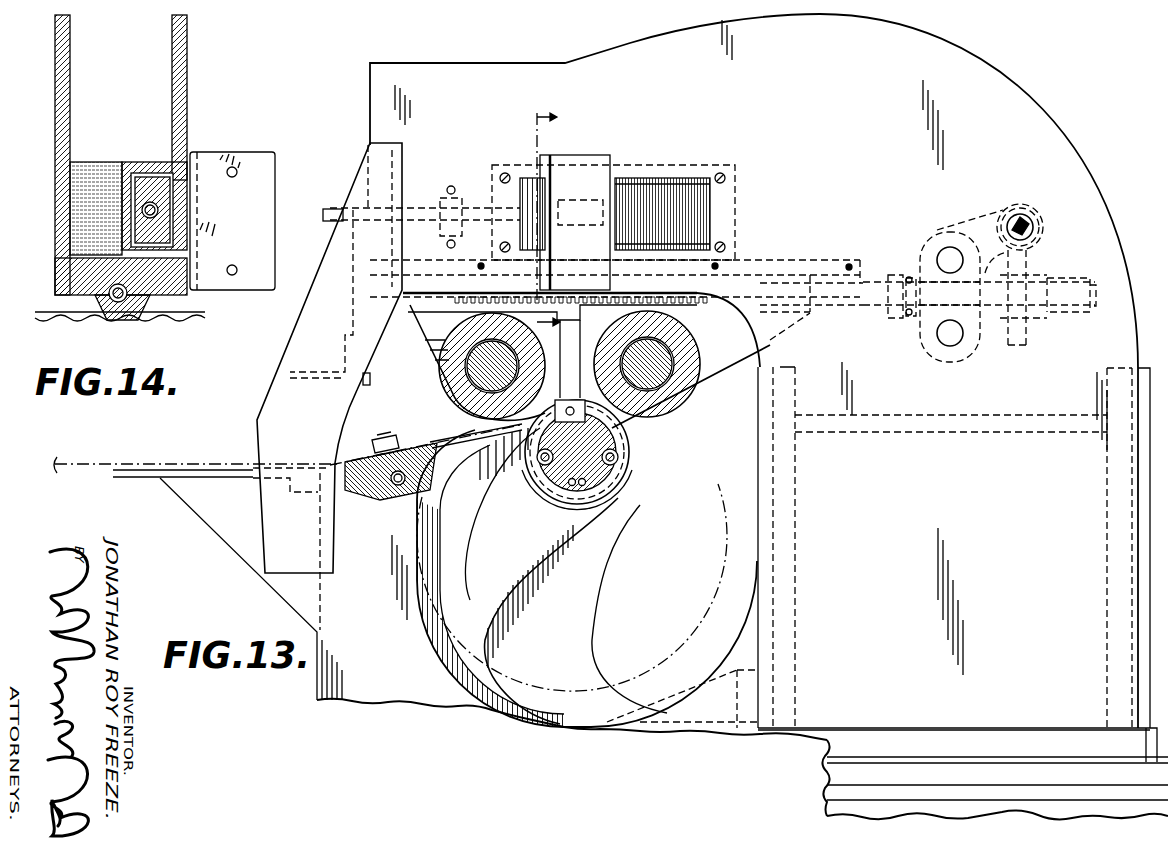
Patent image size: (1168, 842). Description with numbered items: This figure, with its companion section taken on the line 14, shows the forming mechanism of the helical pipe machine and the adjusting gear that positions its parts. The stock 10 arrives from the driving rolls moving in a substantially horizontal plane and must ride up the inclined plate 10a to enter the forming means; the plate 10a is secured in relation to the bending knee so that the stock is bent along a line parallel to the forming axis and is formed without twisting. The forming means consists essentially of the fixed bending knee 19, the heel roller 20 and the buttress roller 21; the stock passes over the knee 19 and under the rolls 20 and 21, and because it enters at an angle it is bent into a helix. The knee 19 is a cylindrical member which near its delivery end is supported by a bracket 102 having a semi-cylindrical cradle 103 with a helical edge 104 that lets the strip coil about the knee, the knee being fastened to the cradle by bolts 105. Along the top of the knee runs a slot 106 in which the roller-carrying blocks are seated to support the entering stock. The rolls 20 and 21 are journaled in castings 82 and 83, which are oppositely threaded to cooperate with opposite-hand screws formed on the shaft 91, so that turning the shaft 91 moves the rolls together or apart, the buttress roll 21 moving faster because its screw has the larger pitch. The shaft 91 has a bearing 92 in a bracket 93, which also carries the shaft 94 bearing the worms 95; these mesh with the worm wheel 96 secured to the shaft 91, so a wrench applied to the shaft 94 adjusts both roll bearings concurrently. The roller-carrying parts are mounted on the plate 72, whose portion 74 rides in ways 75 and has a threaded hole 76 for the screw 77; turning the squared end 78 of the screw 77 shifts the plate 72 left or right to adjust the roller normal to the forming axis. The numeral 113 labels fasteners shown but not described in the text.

In FIG. 13, the stock 10 is at (175, 462).
In FIG. 13, the inclined plate 10a is at (422, 440).
In FIG. 13, the section line 14— 14 is at (560, 229).
In FIG. 13, the bending knee 19 is at (612, 440).
In FIG. 13, the heel roller 20 is at (468, 337).
In FIG. 13, the buttress roller 21 is at (700, 341).
In FIG. 14, the plate 72 is at (241, 152).
In FIG. 13, the plate 72 is at (562, 158).
In FIG. 14, the portion riding in ways 74 is at (152, 176).
In FIG. 14, the ways 75 is at (135, 162).
In FIG. 13, the ways 75 is at (644, 178).
In FIG. 14, the threaded hole 76 is at (157, 206).
In FIG. 13, the threaded hole 76 is at (564, 222).
In FIG. 14, the screw 77 is at (156, 212).
In FIG. 13, the screw 77 is at (528, 178).
In FIG. 13, the squared end 78 is at (336, 210).
In FIG. 13, the casting 82 is at (430, 372).
In FIG. 13, the casting 83 is at (788, 323).
In FIG. 13, the shaft 91 is at (822, 306).
In FIG. 13, the bearing 92 is at (913, 318).
In FIG. 13, the bracket 93 is at (934, 232).
In FIG. 13, the shaft 94 is at (1024, 222).
In FIG. 13, the worms 95 is at (1003, 208).
In FIG. 13, the worm wheel 96 is at (1030, 256).
In FIG. 13, the bracket 102 is at (618, 592).
In FIG. 13, the semi-cylindrical cradle 103 is at (628, 470).
In FIG. 13, the helical edge 104 is at (626, 482).
In FIG. 13, the bolts 105 is at (505, 468).
In FIG. 13, the slot 106 is at (576, 397).
In FIG. 13, the screws 113 is at (618, 458).